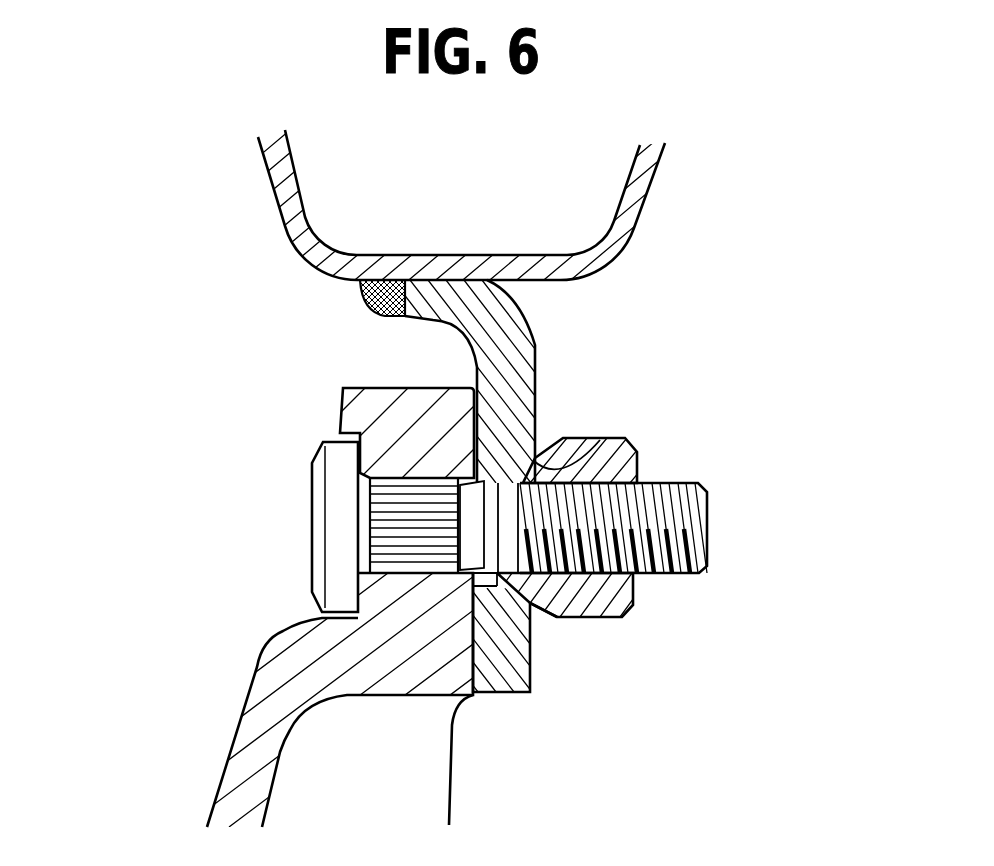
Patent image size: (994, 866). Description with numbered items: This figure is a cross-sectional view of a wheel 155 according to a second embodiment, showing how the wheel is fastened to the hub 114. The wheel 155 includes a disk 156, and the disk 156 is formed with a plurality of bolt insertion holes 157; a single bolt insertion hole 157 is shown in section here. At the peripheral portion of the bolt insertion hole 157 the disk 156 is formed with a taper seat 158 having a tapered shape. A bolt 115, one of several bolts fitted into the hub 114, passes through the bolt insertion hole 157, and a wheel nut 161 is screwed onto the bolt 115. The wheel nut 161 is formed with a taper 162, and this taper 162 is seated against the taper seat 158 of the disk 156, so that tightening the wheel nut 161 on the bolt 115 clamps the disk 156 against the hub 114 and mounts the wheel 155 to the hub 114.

The wheel 155 is at (277, 222).
The disk 156 is at (537, 343).
The bolt insertion hole 157 is at (443, 507).
The taper seat 158 is at (600, 445).
The bolt 115 is at (707, 532).
The hub 114 is at (228, 742).
The wheel nut 161 is at (607, 620).
The taper 162 is at (543, 605).